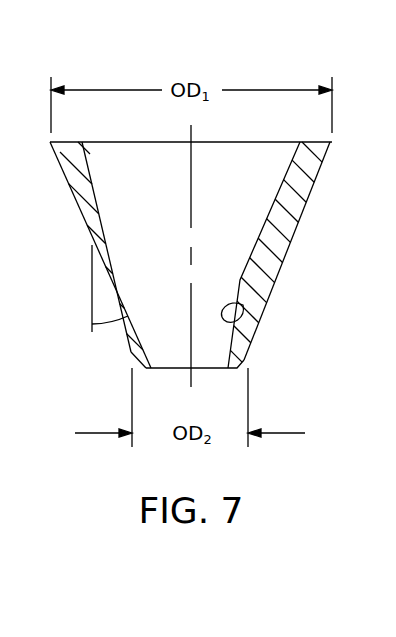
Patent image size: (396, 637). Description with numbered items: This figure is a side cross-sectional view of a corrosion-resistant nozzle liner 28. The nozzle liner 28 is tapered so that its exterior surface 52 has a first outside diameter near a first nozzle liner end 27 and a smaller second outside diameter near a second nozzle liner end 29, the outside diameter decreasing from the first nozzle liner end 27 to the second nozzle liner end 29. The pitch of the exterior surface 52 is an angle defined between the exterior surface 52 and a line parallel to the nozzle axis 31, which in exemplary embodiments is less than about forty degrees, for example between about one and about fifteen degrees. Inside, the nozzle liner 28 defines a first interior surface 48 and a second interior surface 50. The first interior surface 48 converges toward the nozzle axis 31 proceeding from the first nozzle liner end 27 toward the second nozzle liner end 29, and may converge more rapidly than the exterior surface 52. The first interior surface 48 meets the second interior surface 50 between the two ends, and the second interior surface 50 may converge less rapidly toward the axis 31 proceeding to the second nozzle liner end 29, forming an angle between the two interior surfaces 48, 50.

The first nozzle liner end 27 is at (318, 141).
The nozzle liner 28 is at (291, 255).
The second nozzle liner end 29 is at (236, 370).
The nozzle axis 31 is at (190, 198).
The first interior surface 48 is at (284, 178).
The second interior surface 50 is at (224, 322).
The exterior surface 52 is at (285, 256).